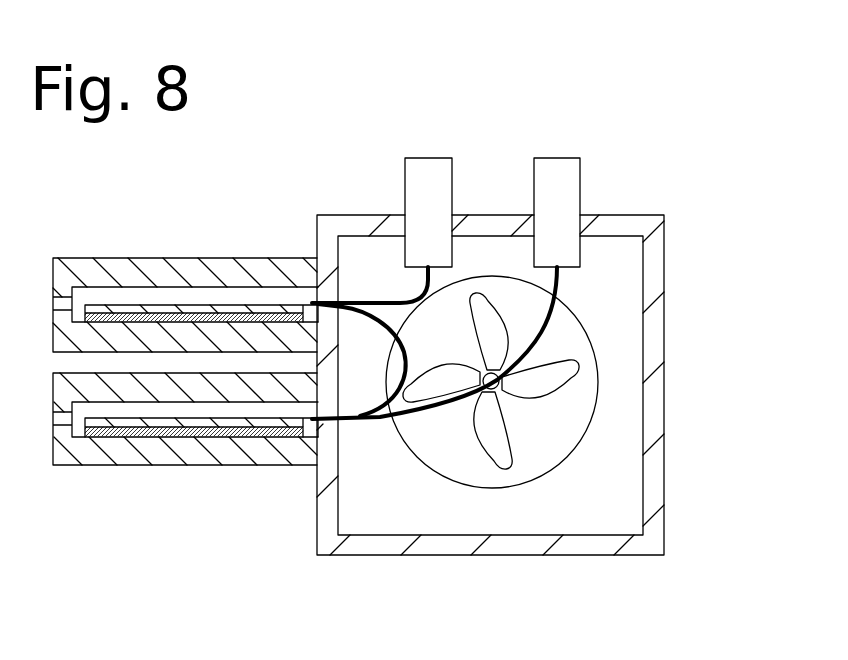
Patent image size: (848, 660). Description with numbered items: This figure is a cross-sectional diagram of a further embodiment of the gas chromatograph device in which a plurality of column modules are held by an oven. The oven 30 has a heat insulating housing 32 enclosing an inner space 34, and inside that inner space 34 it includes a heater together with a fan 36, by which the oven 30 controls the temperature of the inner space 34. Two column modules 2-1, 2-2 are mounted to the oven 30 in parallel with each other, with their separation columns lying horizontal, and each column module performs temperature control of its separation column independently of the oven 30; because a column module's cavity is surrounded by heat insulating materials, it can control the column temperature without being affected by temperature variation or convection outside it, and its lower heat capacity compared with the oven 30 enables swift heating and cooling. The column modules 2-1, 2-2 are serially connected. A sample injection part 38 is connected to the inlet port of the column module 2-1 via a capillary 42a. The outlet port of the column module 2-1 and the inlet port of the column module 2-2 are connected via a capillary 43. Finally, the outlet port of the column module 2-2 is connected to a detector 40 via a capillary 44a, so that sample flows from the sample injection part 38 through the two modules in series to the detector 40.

The column module 2-1 is at (88, 465).
The column module 2-2 is at (78, 258).
The oven 30 is at (665, 215).
The heat insulating housing 32 is at (654, 376).
The inner space 34 is at (622, 445).
The fan 36 is at (557, 375).
The sample injection part 38 is at (418, 188).
The detector 40 is at (565, 180).
The capillary 42a is at (398, 297).
The capillary 43 is at (413, 363).
The capillary 44a is at (560, 283).